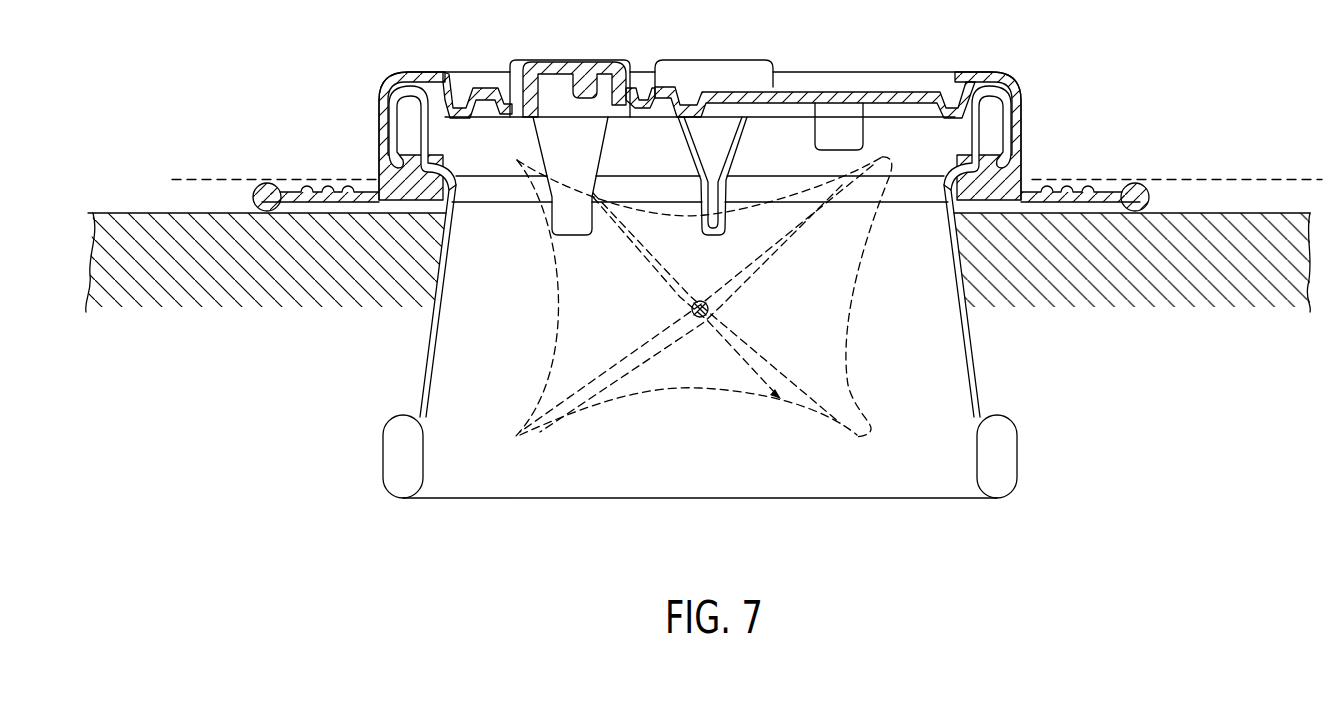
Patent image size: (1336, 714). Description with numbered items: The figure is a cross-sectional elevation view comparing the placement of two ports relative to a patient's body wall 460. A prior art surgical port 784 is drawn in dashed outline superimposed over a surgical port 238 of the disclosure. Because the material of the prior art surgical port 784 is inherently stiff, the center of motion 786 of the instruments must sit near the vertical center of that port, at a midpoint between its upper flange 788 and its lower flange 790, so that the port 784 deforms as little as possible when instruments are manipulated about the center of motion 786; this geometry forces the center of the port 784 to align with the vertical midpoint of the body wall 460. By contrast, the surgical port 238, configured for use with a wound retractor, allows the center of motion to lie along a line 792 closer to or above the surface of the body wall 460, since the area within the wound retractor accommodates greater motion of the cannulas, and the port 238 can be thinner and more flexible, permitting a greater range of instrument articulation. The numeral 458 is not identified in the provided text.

The surgical port 238 is at (1025, 172).
The spring retaining clip 458 is at (995, 540).
The body wall 460 is at (163, 213).
The prior art surgical port 784 is at (848, 398).
The center of motion 786 is at (701, 320).
The upper flange 788 is at (520, 162).
The lower flange 790 is at (542, 432).
The line 792 is at (1217, 178).